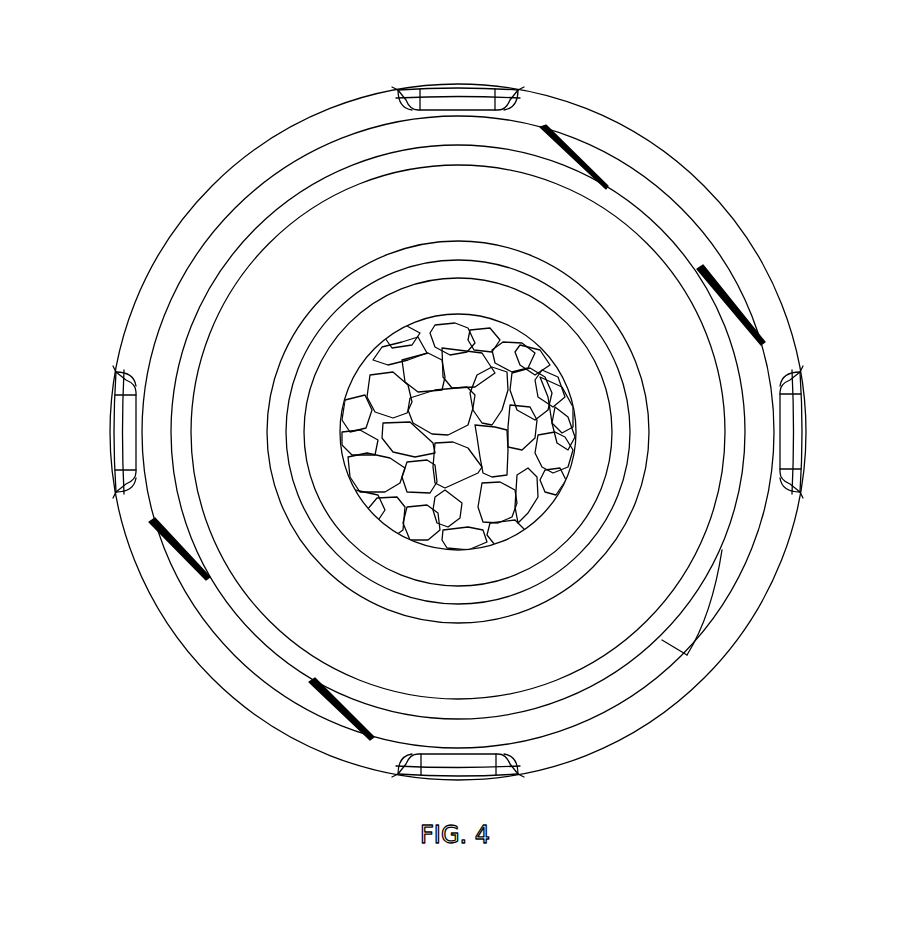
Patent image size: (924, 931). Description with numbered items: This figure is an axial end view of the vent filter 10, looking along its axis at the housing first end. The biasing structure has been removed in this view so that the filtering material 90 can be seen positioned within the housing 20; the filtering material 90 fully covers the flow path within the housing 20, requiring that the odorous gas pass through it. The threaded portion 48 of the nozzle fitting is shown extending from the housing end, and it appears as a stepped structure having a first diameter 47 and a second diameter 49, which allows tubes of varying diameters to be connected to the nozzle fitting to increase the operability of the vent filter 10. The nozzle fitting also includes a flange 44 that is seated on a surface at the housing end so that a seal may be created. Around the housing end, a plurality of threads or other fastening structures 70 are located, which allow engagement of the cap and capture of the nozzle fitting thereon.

The vent filter 10 is at (506, 408).
The housing 20 is at (208, 171).
The flange 44 is at (468, 200).
The first diameter 47 is at (538, 321).
The threaded portion 48 is at (568, 352).
The second diameter 49 is at (493, 256).
The threads or other fastening structures 70 is at (537, 140).
The filtering material 90 is at (528, 417).